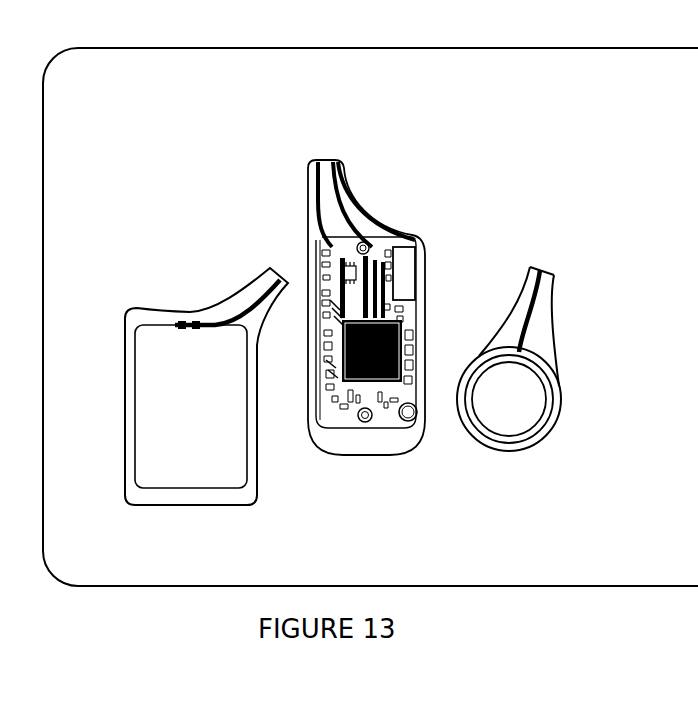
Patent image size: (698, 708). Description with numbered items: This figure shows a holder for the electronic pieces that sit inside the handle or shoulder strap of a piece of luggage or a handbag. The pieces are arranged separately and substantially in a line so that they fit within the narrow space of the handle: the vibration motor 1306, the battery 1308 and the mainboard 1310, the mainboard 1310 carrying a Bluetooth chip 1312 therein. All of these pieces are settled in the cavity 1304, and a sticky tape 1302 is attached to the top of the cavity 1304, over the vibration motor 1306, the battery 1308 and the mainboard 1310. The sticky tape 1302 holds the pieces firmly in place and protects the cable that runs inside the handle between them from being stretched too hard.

The sticky tape 1302 is at (180, 141).
The cavity 1304 is at (502, 330).
The vibration motor 1306 is at (515, 390).
The battery 1308 is at (176, 437).
The mainboard 1310 is at (366, 422).
The Bluetooth chip 1312 is at (383, 362).